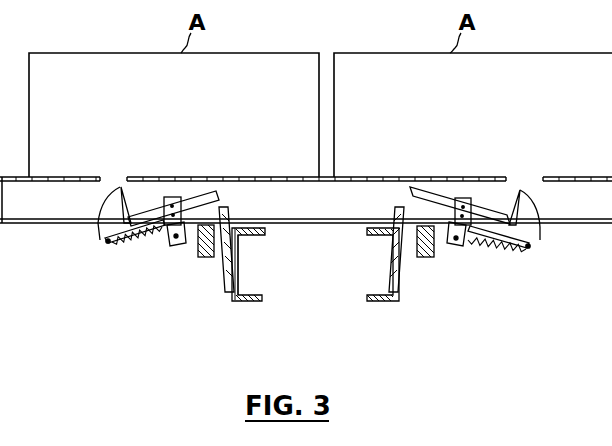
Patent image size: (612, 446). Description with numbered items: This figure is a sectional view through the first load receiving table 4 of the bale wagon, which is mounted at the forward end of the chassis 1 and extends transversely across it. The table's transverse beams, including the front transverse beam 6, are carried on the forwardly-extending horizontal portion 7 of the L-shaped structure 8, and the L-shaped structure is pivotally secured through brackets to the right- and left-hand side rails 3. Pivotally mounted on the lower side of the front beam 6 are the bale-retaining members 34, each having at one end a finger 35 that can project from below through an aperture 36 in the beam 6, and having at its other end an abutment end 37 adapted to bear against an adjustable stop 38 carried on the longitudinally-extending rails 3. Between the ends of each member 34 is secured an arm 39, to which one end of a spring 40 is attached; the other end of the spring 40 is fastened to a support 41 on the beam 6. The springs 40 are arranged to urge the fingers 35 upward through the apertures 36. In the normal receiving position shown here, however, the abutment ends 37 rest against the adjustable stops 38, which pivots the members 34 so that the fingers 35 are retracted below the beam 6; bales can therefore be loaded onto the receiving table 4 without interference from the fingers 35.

The chassis 1 is at (360, 300).
The side rails 3 is at (250, 301).
The first load receiving table 4 is at (38, 223).
The front transverse beam 6 is at (68, 223).
The forwardly-extending horizontal portion 7 is at (225, 264).
The L-shaped structure 8 is at (205, 260).
The bale-retaining members 34 is at (188, 197).
The fingers 35 is at (100, 240).
The apertures 36 is at (105, 177).
The abutment ends 37 is at (210, 193).
The adjustable stops 38 is at (215, 260).
The arms 39 is at (173, 246).
The springs 40 is at (126, 246).
The support 41 is at (108, 246).